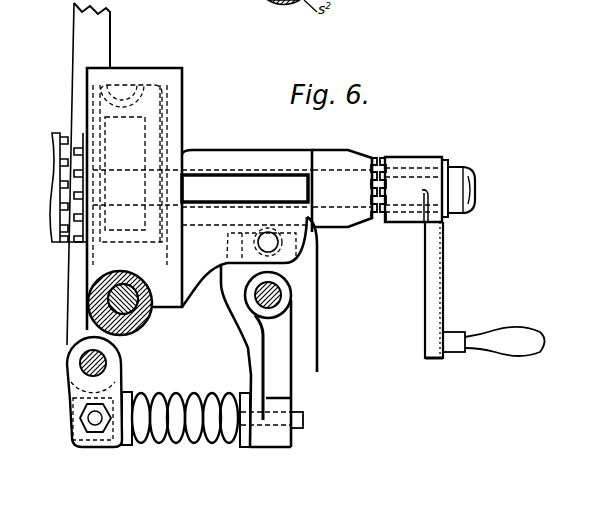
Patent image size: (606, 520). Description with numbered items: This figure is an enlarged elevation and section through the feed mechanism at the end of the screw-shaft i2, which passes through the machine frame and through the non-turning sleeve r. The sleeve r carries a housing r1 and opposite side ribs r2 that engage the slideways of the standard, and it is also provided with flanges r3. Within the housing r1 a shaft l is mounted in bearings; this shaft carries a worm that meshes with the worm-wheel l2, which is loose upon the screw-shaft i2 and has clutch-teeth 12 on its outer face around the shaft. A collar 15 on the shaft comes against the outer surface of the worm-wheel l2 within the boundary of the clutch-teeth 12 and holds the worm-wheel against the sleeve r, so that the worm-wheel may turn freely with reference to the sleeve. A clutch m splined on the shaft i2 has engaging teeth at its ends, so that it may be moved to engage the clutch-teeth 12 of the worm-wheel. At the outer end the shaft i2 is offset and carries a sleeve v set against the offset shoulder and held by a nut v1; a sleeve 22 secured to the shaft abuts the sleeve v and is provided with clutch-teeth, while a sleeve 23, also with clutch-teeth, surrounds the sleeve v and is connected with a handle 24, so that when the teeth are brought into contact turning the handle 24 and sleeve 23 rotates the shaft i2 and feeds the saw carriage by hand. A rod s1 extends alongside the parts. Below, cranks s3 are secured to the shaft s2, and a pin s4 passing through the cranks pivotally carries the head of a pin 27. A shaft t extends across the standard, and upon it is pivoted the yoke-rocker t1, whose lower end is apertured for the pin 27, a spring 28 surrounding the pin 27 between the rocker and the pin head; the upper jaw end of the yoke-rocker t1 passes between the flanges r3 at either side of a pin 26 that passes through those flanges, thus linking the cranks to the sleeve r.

The rod s1 is at (73, 34).
The housing r1 is at (134, 67).
The worm-wheel l2 is at (107, 122).
The clutch m is at (50, 233).
The collar 15 is at (67, 243).
The clutch-teeth 12 is at (79, 247).
The shaft l is at (122, 312).
The sleeve r is at (215, 150).
The side ribs r2 is at (256, 178).
The flanges r3 is at (244, 248).
The pin 26 is at (272, 244).
The screw-shaft i2 is at (333, 170).
The sleeve 22 is at (354, 162).
The sleeve 23 is at (422, 150).
The nut v1 is at (458, 170).
The sleeve v is at (406, 214).
The handle 24 is at (432, 291).
The shaft t is at (273, 303).
The yoke-rocker t1 is at (273, 365).
The pin 27 is at (108, 457).
The spring 28 is at (196, 440).
The cranks s3 is at (72, 400).
The shaft s2 is at (90, 366).
The pin s4 is at (82, 436).